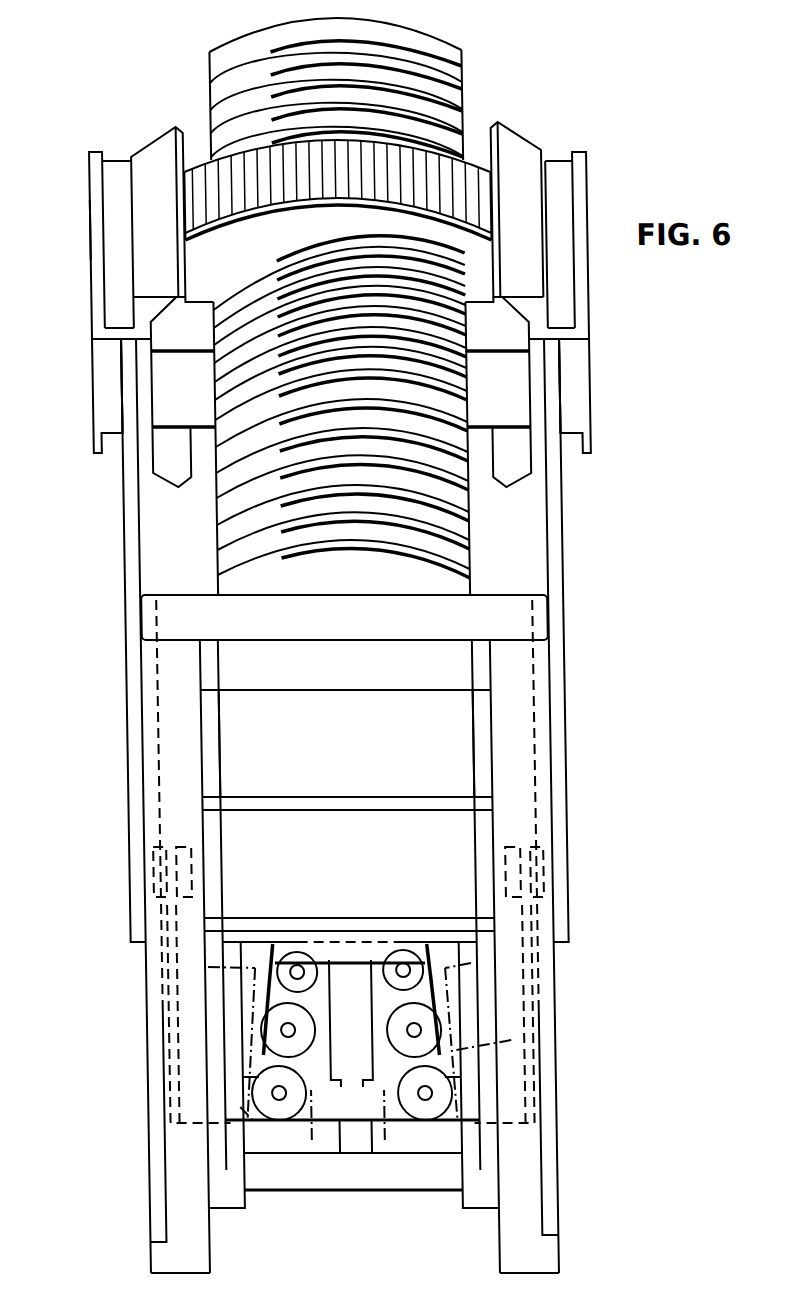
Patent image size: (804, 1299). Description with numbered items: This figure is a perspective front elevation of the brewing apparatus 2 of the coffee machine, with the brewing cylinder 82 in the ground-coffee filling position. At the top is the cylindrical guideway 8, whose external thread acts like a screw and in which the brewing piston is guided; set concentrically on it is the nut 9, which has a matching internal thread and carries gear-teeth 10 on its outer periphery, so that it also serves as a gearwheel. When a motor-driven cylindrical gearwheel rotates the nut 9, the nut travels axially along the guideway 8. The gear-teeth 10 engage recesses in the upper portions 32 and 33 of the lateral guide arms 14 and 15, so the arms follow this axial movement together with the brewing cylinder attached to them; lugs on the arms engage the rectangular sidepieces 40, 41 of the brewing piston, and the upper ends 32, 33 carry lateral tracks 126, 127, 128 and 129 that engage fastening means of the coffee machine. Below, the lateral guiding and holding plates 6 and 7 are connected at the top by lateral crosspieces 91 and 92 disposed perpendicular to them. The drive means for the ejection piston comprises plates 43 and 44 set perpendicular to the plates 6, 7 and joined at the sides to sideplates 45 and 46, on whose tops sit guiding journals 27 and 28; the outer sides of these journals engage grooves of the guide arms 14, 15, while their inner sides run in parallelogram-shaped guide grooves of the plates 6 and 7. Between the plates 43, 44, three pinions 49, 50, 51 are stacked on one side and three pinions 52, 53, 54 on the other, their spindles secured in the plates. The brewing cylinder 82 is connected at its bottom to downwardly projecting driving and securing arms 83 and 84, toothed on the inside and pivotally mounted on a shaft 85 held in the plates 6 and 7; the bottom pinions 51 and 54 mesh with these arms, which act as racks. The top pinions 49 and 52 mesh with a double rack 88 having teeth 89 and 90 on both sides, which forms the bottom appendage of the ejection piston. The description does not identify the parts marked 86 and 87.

The brewing apparatus 2 is at (94, 255).
The lateral guiding and holding plate 6 is at (526, 780).
The lateral guiding and holding plate 7 is at (163, 778).
The cylindrical guideway 8 is at (219, 70).
The nut 9 is at (205, 255).
The gear-teeth 10 is at (437, 163).
The guide arm 14 is at (129, 565).
The guide arm 15 is at (558, 543).
The guiding journal 27 is at (144, 853).
The guiding journal 28 is at (552, 848).
The upper portion of guide arm 32 is at (157, 152).
The upper portion of guide arm 33 is at (533, 150).
The rectangular sidepiece 40 is at (171, 383).
The rectangular sidepiece 41 is at (507, 370).
The plate 43 is at (136, 1136).
The plate 44 is at (211, 1093).
The sideplate 45 is at (162, 978).
The sideplate 46 is at (563, 947).
The pinion 49 is at (278, 930).
The pinion 50 is at (315, 1135).
The pinion 51 is at (262, 1140).
The pinion 52 is at (383, 1135).
The pinion 53 is at (505, 1040).
The pinion 54 is at (415, 1140).
The brewing cylinder 82 is at (457, 747).
The driving and securing arm 83 is at (228, 1023).
The driving and securing arm 84 is at (472, 1008).
The shaft 85 is at (453, 1178).
The belt 86 is at (203, 967).
The belt 87 is at (466, 963).
The double rack 88 is at (348, 1137).
The teeth 89 is at (304, 1140).
The teeth 90 is at (377, 1140).
The lateral crosspiece 91 is at (406, 615).
The lateral crosspiece 92 is at (538, 615).
The lateral track 126 is at (115, 185).
The lateral track 127 is at (569, 178).
The lateral track 128 is at (110, 413).
The lateral track 129 is at (586, 407).